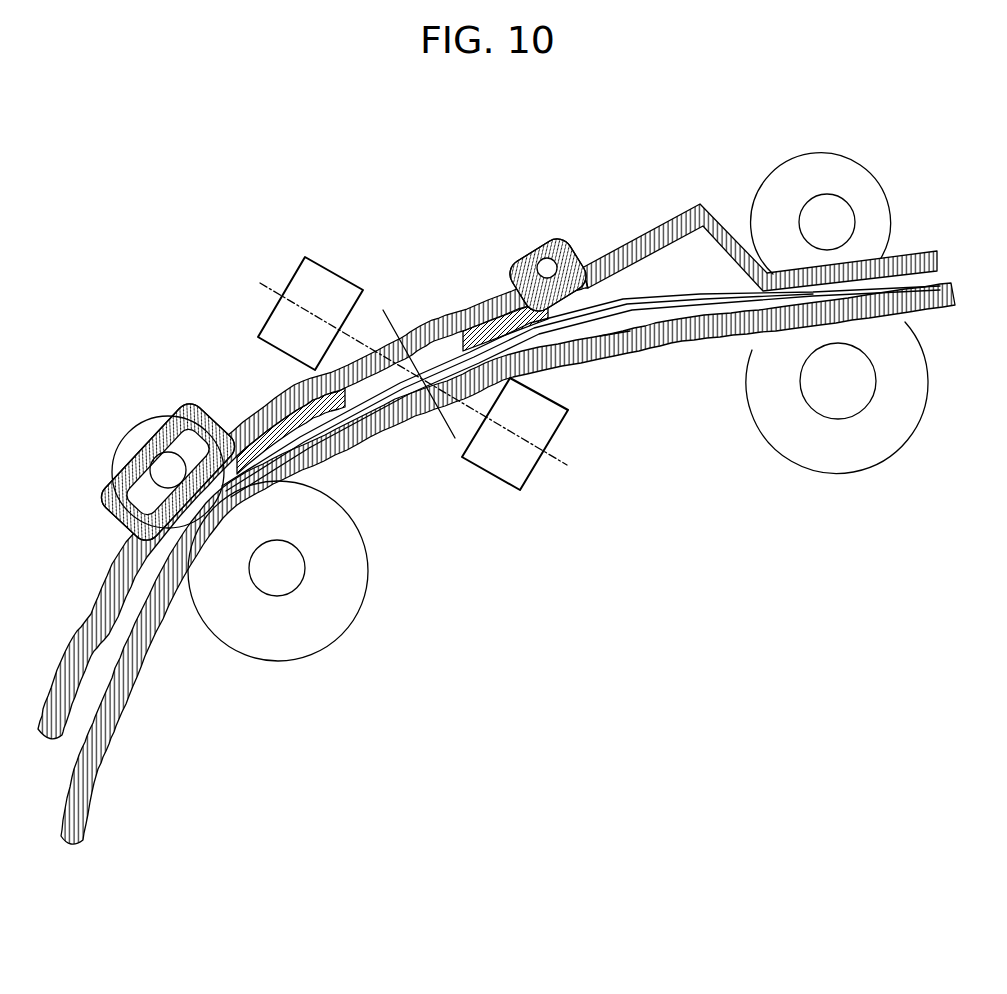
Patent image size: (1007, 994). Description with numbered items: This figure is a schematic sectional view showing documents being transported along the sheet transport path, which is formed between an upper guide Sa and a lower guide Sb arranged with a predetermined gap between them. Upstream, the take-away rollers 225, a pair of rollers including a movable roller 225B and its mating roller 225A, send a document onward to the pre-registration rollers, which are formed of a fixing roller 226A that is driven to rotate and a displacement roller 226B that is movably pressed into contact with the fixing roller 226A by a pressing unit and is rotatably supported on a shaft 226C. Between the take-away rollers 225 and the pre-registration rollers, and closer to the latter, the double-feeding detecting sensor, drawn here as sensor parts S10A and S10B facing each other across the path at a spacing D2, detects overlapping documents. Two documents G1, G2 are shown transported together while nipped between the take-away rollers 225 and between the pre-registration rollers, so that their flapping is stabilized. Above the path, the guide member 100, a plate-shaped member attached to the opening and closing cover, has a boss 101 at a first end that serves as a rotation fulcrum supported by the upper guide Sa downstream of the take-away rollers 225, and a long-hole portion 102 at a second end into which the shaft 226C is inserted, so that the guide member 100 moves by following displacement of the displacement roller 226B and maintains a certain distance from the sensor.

The guide member 100 is at (480, 310).
The boss 101 is at (538, 262).
The long-hole portion 102 is at (186, 440).
The take-away rollers 225 is at (757, 212).
The conveying roller 225A is at (840, 433).
The movable roller 225B is at (807, 187).
The fixing roller 226A is at (277, 620).
The displacement roller 226B is at (133, 440).
The shaft 226C is at (117, 470).
The sheet sensor S10A is at (510, 453).
The sheet sensor S10B is at (307, 280).
The upper guide Sa is at (307, 380).
The lower guide Sb is at (370, 425).
The document G1 is at (623, 297).
The document G2 is at (617, 343).
The distance D2 is at (419, 360).